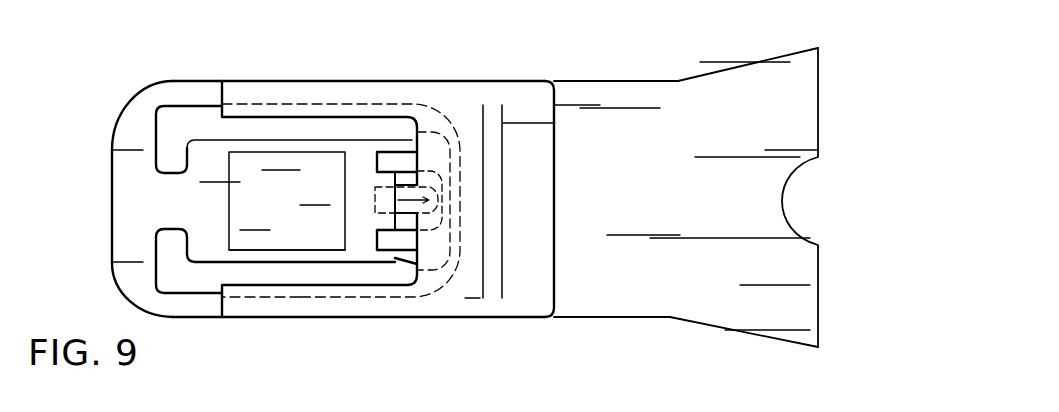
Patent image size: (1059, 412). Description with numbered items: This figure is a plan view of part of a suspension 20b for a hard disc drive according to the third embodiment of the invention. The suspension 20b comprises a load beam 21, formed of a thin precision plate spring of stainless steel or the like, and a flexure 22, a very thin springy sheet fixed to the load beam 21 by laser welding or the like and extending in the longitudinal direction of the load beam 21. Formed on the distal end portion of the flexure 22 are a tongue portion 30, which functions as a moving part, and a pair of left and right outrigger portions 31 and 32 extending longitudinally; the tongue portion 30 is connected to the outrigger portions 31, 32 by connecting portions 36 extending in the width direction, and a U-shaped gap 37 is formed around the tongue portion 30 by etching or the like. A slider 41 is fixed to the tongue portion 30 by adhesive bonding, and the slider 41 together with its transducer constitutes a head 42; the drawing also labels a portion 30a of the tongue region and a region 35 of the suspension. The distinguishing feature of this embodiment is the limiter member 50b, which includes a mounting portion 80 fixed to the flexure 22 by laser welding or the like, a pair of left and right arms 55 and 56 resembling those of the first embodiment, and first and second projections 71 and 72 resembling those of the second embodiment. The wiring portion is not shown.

The suspension 20b is at (660, 78).
The load beam 21 is at (755, 62).
The flexure 22 is at (648, 305).
The tongue portion 30 is at (256, 147).
The contact block end portion 30a is at (418, 158).
The outrigger portion 31 is at (308, 103).
The outrigger portion 32 is at (277, 300).
The housing 35 is at (160, 198).
The connecting portion 36 is at (147, 101).
The U-shaped gap 37 is at (175, 125).
The slider 41 is at (300, 242).
The head 42 is at (217, 246).
The limiter member 50b is at (546, 78).
The arm 55 is at (253, 90).
The arm 56 is at (238, 313).
The first projection 71 is at (387, 150).
The second projection 72 is at (378, 203).
The mounting portion 80 is at (540, 203).